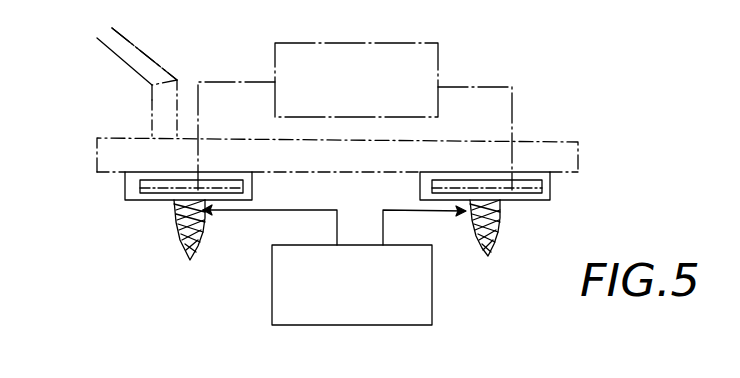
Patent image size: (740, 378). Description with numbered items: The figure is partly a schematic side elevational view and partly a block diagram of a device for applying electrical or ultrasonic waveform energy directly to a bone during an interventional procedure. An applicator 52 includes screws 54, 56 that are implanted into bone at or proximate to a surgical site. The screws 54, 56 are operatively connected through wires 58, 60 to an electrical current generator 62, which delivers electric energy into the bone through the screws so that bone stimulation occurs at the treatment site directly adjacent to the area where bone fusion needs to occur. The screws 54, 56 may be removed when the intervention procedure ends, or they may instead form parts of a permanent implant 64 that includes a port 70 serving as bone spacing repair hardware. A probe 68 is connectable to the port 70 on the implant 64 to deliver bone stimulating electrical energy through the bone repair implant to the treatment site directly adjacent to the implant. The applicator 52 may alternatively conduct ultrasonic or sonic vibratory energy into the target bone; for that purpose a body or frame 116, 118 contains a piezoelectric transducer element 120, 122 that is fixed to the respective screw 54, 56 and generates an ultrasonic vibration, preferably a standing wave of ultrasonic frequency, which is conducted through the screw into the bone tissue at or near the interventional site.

The applicator 52 is at (93, 258).
The screw 54 is at (182, 225).
The screw 56 is at (500, 231).
The wire 58 is at (223, 210).
The wire 60 is at (445, 213).
The electrical current generator 62 is at (432, 308).
The permanent implant 64 is at (557, 117).
The probe 68 is at (153, 58).
The port 70 is at (150, 101).
The body or frame 116 is at (125, 188).
The body or frame 118 is at (550, 182).
The piezoelectric transducer element 120 is at (153, 190).
The piezoelectric transducer element 122 is at (548, 189).